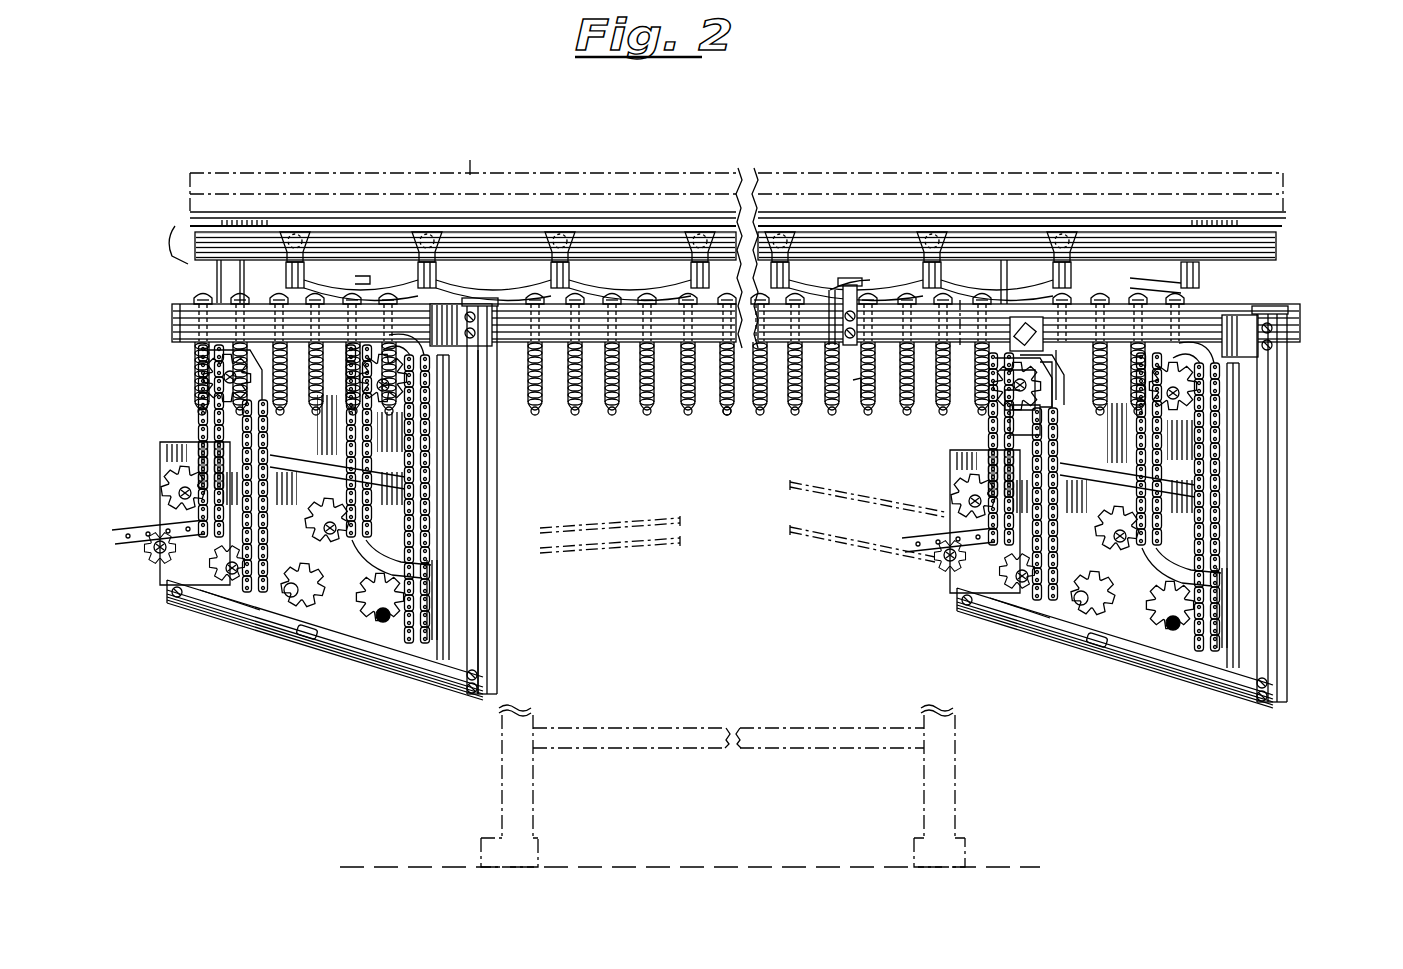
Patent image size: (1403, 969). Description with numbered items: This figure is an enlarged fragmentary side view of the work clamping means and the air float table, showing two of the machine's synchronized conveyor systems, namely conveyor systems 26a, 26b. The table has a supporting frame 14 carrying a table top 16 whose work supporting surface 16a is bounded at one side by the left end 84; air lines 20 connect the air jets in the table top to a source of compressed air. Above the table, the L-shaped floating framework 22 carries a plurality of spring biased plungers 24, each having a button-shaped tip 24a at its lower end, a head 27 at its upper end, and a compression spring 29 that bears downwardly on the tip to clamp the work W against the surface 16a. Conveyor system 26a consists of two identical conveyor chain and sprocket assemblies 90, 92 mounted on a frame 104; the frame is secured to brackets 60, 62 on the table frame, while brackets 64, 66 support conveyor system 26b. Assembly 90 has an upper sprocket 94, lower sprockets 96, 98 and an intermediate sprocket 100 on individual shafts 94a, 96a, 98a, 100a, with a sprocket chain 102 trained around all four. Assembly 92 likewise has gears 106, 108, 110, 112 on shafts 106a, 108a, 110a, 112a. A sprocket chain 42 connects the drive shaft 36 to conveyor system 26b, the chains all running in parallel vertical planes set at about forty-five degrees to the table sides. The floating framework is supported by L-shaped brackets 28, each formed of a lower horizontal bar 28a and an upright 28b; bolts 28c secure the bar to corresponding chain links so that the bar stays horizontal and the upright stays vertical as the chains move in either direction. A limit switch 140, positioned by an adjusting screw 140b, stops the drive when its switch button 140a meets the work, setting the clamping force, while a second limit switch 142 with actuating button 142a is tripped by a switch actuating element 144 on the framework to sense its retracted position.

The supporting frame 14 is at (535, 793).
The table top 16 is at (1274, 263).
The work supporting surface 16a is at (1250, 242).
The air lines 20 is at (213, 278).
The floating framework 22 is at (673, 344).
The spring biased plungers 24 is at (619, 417).
The button-shaped tip 24a is at (721, 410).
The conveyor system 26a is at (248, 656).
The conveyor system 26b is at (1138, 690).
The head 27 is at (643, 300).
The brackets 28 is at (505, 692).
The lower horizontal bar 28a is at (440, 691).
The upright 28b is at (498, 598).
The bolts 28c is at (177, 596).
The compression spring 29 is at (855, 398).
The shaft 36 is at (630, 543).
The sprocket chain 42 is at (816, 546).
The bracket 60 is at (179, 232).
The bracket 62 is at (350, 260).
The bracket 64 is at (1008, 261).
The bracket 66 is at (1063, 368).
The left end 84 is at (1267, 259).
The conveyor chain and sprocket assembly 90 is at (187, 430).
The conveyor chain and sprocket assembly 92 is at (468, 430).
The upper sprocket 94 is at (213, 370).
The shaft 94a is at (220, 379).
The lower sprocket 96 is at (167, 564).
The shaft 96a is at (133, 535).
The lower sprocket 98 is at (225, 581).
The shaft 98a is at (234, 574).
The intermediate sprocket 100 is at (165, 491).
The shaft 100a is at (175, 472).
The sprocket chain 102 is at (152, 557).
The frame 104 is at (444, 558).
The gear 106 is at (1188, 413).
The shaft 106a is at (1188, 386).
The gear 108 is at (308, 563).
The shaft 108a is at (290, 598).
The gear 110 is at (378, 621).
The shaft 110a is at (385, 623).
The gear 112 is at (318, 515).
The shaft 112a is at (338, 526).
The limit switch 140 is at (1040, 340).
The switch button 140a is at (1056, 380).
The adjusting screw 140b is at (1025, 367).
The limit switch 142 is at (848, 278).
The actuating button 142a is at (883, 285).
The switch actuating element 144 is at (830, 348).
The width W is at (475, 216).